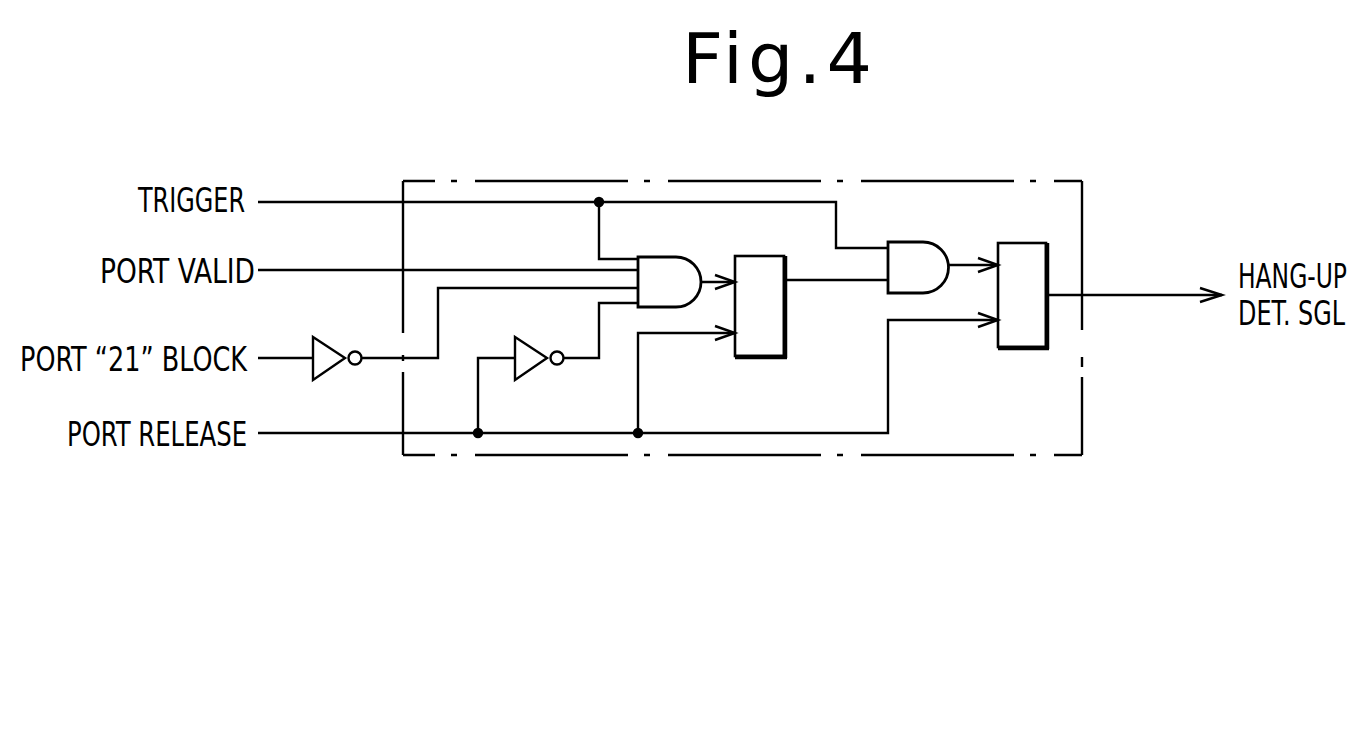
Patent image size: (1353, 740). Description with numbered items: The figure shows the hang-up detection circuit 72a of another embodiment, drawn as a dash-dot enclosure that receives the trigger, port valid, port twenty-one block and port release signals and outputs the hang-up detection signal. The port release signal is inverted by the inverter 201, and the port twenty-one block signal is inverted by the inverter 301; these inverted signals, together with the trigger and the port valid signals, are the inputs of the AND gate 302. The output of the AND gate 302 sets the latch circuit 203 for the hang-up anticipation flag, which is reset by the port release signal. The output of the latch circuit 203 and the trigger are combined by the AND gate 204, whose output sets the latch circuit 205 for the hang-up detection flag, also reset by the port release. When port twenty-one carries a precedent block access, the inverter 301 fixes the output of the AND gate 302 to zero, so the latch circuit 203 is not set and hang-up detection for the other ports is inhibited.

The hang-up detection circuit 72a is at (695, 180).
The inverter 301 is at (330, 371).
The inverter 201 is at (534, 372).
The AND gate 302 is at (662, 256).
The latch circuit for the hang-up anticipation flag 203 is at (788, 330).
The AND gate 204 is at (909, 241).
The latch circuit for the hang-up detection flag 205 is at (1015, 350).